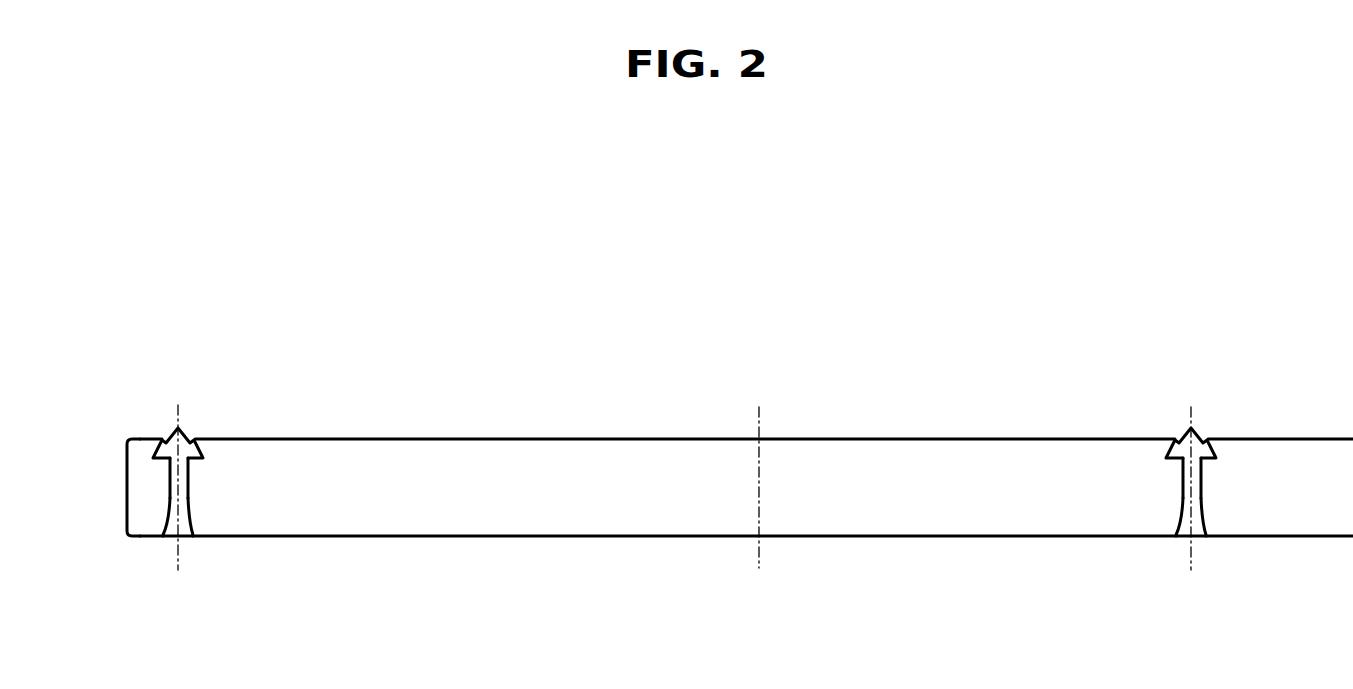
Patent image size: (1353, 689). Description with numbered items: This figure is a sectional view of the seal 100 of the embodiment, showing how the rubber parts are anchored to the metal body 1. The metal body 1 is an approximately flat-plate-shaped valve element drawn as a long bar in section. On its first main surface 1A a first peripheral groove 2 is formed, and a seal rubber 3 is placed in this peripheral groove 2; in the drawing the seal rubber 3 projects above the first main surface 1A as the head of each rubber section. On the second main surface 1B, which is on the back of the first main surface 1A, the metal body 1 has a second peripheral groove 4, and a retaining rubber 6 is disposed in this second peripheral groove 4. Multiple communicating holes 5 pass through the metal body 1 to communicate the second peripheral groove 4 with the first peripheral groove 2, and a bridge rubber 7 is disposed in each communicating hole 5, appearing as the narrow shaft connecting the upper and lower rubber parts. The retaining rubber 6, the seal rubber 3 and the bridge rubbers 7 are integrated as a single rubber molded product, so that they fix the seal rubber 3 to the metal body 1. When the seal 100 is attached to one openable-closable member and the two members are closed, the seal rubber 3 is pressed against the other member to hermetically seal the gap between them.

The seal 100 is at (1226, 357).
The metal body 1 is at (740, 487).
The first main surface 1A is at (998, 440).
The second main surface 1B is at (1072, 538).
The first peripheral groove 2 is at (674, 472).
The seal rubber 3 is at (177, 433).
The second peripheral groove 4 is at (195, 521).
The communicating hole 5 is at (184, 484).
The retaining rubber 6 is at (172, 527).
The bridge rubber 7 is at (178, 500).